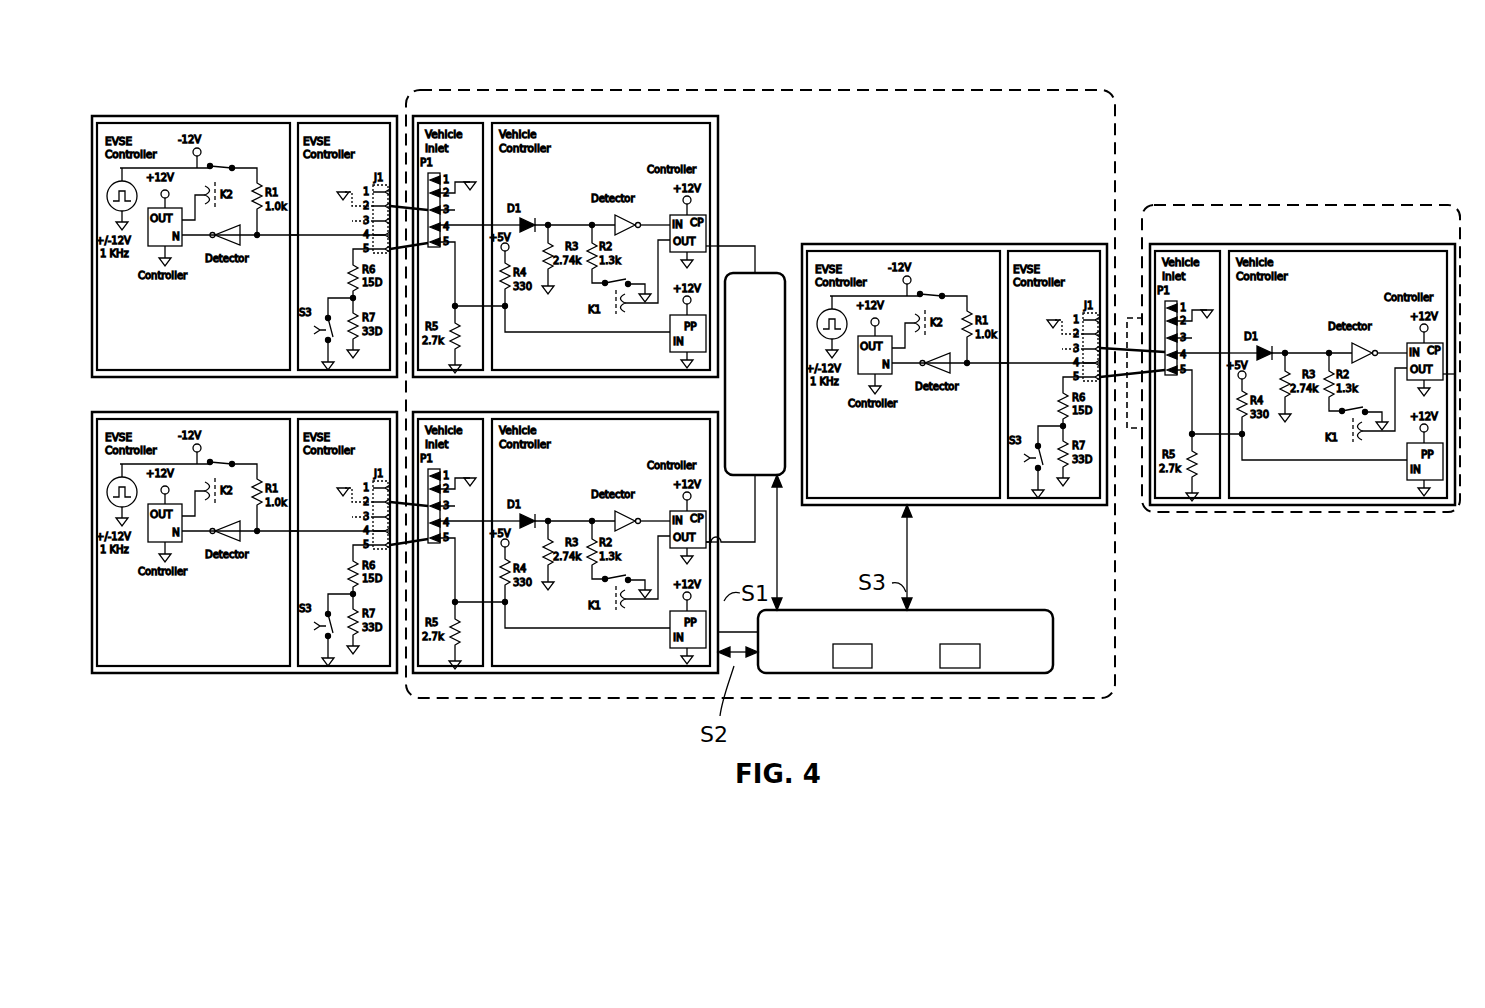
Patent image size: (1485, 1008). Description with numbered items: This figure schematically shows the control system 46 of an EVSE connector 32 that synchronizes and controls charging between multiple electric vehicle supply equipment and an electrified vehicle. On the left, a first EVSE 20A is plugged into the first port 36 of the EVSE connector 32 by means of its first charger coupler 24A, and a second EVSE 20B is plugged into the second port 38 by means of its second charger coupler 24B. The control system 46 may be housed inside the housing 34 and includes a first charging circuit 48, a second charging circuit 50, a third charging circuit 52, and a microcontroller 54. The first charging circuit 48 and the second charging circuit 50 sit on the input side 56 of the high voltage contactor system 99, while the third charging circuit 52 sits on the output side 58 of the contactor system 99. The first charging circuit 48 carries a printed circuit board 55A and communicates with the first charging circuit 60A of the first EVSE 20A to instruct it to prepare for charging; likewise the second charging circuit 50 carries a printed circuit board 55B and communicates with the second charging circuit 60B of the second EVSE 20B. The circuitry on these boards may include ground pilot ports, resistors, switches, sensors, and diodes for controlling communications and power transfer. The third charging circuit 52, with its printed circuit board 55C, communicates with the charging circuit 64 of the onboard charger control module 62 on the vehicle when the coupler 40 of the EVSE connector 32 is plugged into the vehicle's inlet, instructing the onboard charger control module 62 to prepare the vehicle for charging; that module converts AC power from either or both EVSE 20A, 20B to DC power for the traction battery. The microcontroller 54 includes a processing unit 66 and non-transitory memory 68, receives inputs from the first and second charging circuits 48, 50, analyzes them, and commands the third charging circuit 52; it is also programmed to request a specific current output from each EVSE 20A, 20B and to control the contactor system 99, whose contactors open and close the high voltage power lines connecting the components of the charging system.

The first EVSE 20A is at (244, 233).
The second EVSE 20B is at (244, 527).
The first charger coupler 24A is at (372, 364).
The second charger coupler 24B is at (311, 664).
The EVSE connector 32 is at (1050, 76).
The housing 34 is at (788, 376).
The first port 36 is at (406, 182).
The second port 38 is at (410, 592).
The coupler 40 is at (1128, 432).
The control system 46 is at (947, 375).
The first charging circuit 48 is at (535, 212).
The second charging circuit 50 is at (527, 542).
The third charging circuit 52 is at (1002, 521).
The microcontroller 54 is at (909, 663).
The printed circuit board 55A is at (628, 142).
The printed circuit board 55B is at (594, 398).
The printed circuit board 55C is at (952, 490).
The input side 56 is at (724, 285).
The output side 58 is at (947, 397).
The first charging circuit of the first EVSE 60A is at (205, 338).
The second charging circuit of the second EVSE 60B is at (205, 634).
The onboard charger control module 62 is at (1301, 359).
The charging circuit 64 is at (1353, 524).
The processing unit 66 is at (853, 670).
The non-transitory memory 68 is at (960, 670).
The high voltage contactor system 99 is at (763, 260).